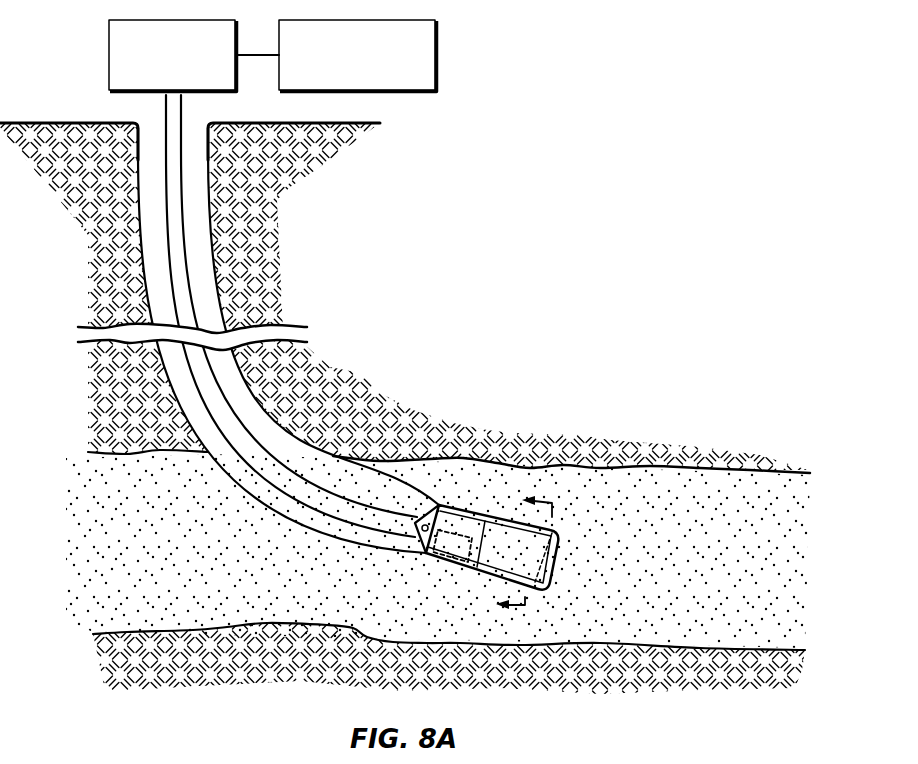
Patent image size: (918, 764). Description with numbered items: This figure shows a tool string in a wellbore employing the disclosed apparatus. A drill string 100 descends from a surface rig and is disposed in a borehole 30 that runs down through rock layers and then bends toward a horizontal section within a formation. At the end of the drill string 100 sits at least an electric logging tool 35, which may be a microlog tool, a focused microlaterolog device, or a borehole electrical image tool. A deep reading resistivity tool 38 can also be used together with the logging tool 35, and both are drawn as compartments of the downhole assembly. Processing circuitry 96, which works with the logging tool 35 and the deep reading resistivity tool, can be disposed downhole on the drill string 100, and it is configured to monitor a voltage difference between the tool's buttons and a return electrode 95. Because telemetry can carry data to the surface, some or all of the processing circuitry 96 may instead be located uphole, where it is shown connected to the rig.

The drill string 100 is at (410, 350).
The borehole 30 is at (216, 199).
The processing circuitry 96 is at (433, 20).
The deep reading resistivity tool 38 is at (463, 522).
The electric logging tool 35 is at (503, 532).
The return electrode 95 is at (422, 534).